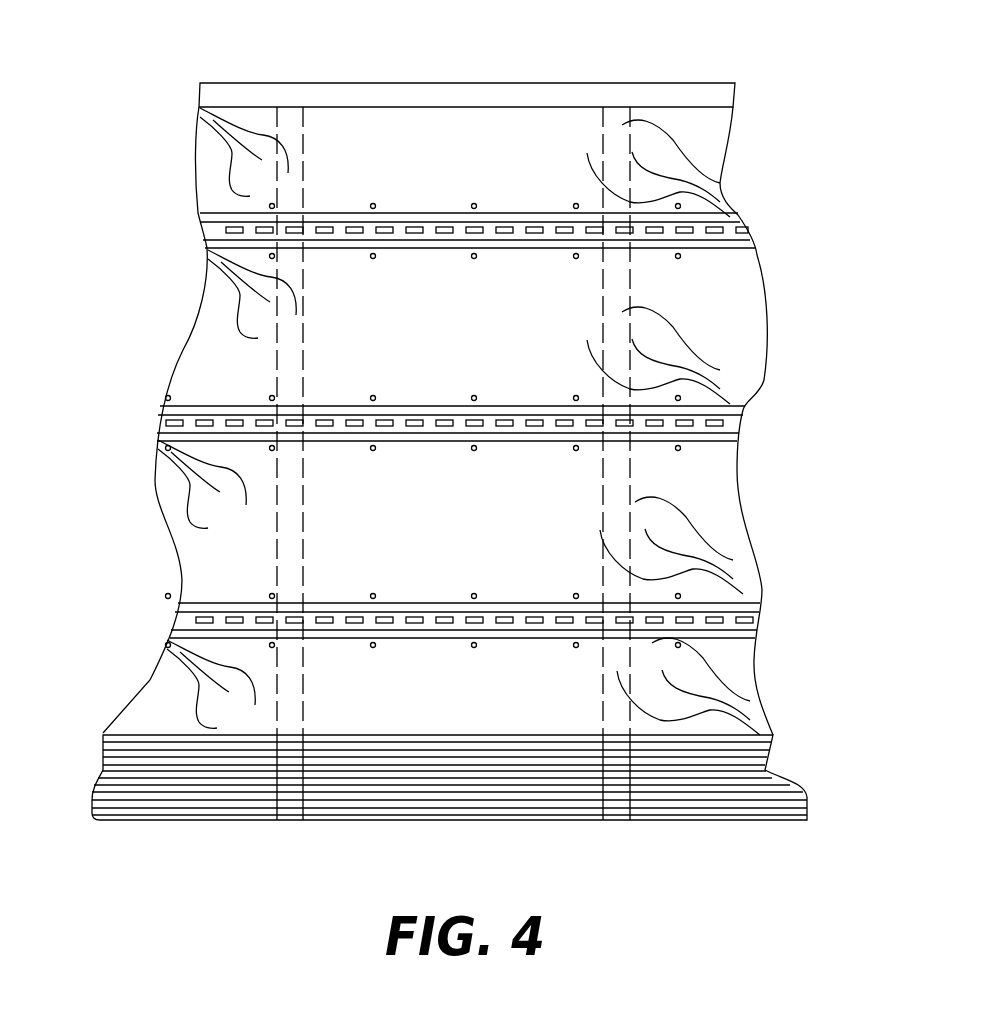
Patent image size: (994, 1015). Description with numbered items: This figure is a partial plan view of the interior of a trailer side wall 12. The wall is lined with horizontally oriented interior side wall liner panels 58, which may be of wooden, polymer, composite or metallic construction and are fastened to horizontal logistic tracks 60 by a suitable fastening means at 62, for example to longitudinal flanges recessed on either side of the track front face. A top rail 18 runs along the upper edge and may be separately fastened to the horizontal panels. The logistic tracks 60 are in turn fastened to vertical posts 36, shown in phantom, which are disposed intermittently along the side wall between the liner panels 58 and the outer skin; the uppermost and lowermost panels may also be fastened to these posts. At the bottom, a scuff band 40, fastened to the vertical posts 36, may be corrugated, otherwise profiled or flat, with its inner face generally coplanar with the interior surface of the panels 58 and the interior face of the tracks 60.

The side wall 12 is at (172, 211).
The top rail 18 is at (677, 83).
The interior side wall liner panels 58 is at (730, 123).
The horizontal logistic tracks 60 is at (737, 220).
The fastening means 62 is at (679, 203).
The vertical posts 36 is at (635, 327).
The scuff band 40 is at (765, 770).